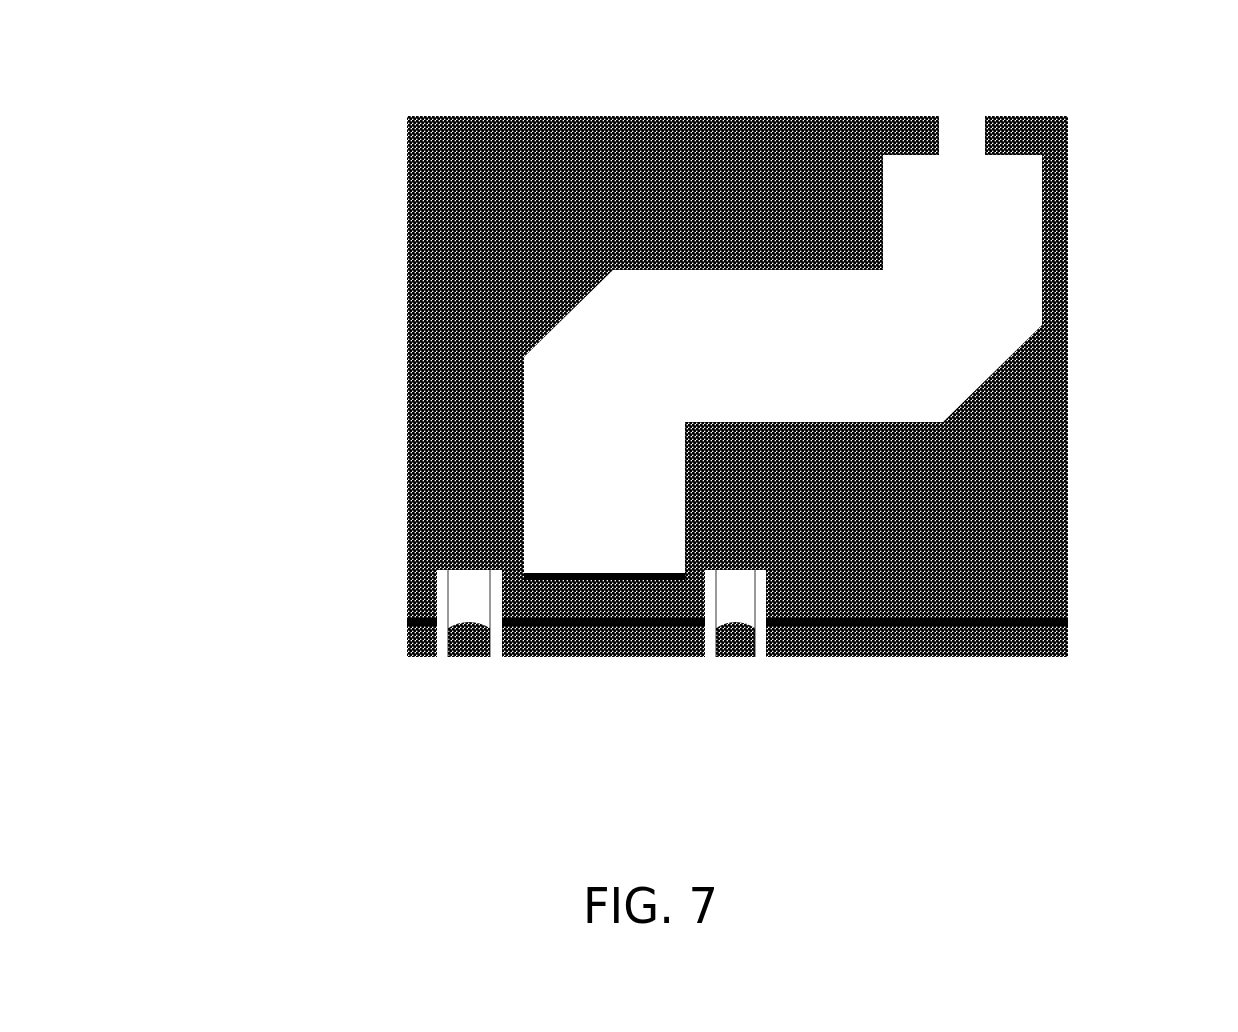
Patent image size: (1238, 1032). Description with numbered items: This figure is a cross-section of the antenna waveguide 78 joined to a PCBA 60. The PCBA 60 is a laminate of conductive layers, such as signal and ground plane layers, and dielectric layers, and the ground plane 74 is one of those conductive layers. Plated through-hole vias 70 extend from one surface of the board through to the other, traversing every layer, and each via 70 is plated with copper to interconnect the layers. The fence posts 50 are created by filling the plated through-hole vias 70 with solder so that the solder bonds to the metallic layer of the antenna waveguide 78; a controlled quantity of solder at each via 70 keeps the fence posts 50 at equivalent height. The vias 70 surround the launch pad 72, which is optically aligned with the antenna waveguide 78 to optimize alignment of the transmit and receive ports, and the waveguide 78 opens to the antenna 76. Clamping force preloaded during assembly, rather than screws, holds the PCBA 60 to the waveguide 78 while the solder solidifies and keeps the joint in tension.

The fence post 50 is at (465, 570).
The PCBA 60 is at (1068, 642).
The plated through-hole via 70 is at (437, 660).
The launch pad 72 is at (605, 572).
The Ground Plane 74 is at (815, 624).
The Antenna 76 is at (962, 115).
The antenna waveguide 78 is at (633, 315).